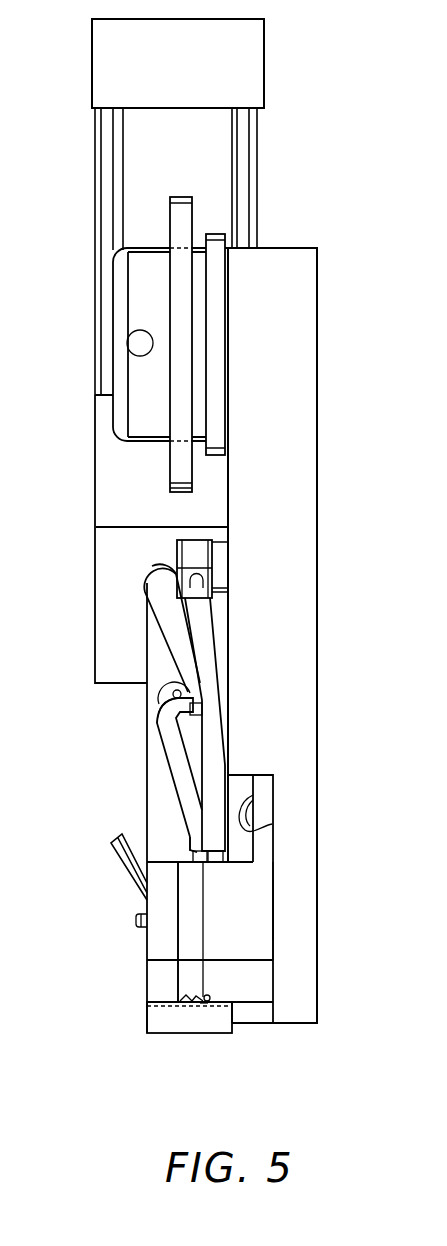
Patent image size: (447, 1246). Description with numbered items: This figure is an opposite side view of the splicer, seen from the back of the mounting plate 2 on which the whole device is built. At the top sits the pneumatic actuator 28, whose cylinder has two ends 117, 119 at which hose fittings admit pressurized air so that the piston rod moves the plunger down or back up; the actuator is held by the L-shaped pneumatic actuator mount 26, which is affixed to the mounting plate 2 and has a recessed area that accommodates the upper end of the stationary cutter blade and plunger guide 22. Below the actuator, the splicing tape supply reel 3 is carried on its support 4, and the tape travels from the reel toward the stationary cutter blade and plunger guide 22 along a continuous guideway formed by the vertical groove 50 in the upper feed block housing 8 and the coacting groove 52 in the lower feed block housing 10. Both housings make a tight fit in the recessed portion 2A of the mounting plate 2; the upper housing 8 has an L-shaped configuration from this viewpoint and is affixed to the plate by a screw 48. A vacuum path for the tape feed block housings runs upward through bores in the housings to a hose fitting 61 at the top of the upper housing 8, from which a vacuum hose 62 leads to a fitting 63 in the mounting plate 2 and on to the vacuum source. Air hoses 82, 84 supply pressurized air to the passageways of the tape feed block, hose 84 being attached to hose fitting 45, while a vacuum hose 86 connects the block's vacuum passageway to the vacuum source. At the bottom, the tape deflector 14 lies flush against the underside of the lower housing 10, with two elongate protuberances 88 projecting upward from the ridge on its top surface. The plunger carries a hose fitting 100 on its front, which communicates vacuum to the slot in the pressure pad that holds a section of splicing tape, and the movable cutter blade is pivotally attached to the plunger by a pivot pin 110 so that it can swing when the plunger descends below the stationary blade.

The mounting plate 2 is at (277, 426).
The recessed portion of mounting plate 2A is at (272, 912).
The splicing tape supply reel 3 is at (177, 460).
The support 4 is at (133, 292).
The upper feed block housing 8 is at (167, 917).
The lower feed block housing 10 is at (169, 994).
The tape deflector 14 is at (150, 1017).
The stationary cutter blade and plunger guide 22 is at (152, 626).
The pneumatic actuator mount 26 is at (105, 559).
The pneumatic actuator 28 is at (168, 143).
The hose fitting 45 is at (192, 853).
The screw 48 is at (272, 824).
The vertical groove 50 is at (205, 937).
The groove 52 is at (205, 986).
The hose fitting 61 is at (217, 858).
The vacuum hose 62 is at (215, 733).
The fitting 63 is at (197, 545).
The air hose 82 is at (160, 567).
The air hose 84 is at (160, 728).
The vacuum hose 86 is at (160, 693).
The elongate protuberances 88 is at (208, 1003).
The hose fitting 100 is at (130, 863).
The pivot pin 110 is at (135, 920).
The end of actuator cylinder 117 is at (168, 74).
The end of actuator cylinder 119 is at (103, 477).